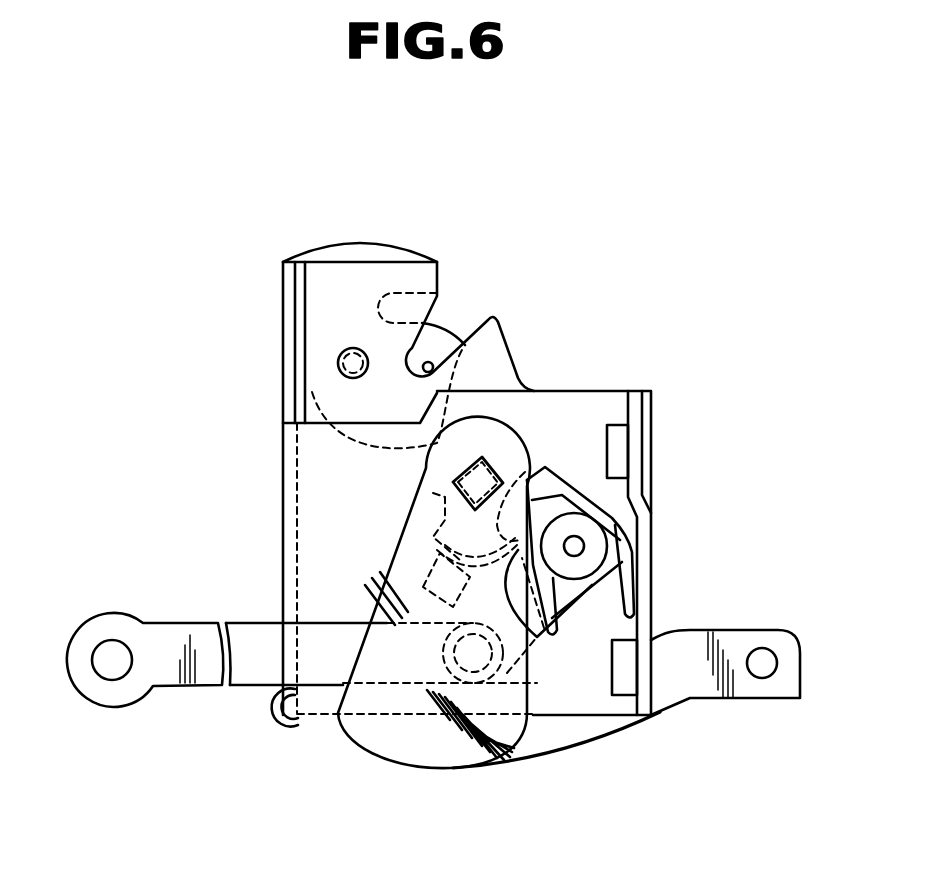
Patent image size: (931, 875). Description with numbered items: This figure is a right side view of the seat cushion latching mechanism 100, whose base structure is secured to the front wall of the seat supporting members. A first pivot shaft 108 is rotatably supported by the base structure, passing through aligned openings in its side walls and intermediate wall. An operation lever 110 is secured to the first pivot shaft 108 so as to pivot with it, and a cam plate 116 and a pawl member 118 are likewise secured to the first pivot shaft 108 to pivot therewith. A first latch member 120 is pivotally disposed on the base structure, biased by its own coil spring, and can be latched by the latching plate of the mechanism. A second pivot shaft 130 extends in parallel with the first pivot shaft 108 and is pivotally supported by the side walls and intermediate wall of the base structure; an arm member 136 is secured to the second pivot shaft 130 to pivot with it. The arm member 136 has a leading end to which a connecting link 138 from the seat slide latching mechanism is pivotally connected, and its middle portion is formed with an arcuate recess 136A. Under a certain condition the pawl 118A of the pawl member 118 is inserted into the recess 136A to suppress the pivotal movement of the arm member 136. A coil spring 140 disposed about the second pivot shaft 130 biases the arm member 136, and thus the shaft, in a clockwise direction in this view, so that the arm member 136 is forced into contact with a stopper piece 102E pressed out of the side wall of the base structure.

The seat cushion latching mechanism 100 is at (572, 284).
The first latch member 120 is at (360, 243).
The cam plate 116 is at (417, 745).
The first pivot shaft 108 is at (487, 465).
The pawl member 118 is at (435, 497).
The pawl 118A is at (430, 537).
The stopper piece 102E is at (427, 580).
The arm member 136 is at (560, 485).
The second pivot shaft 130 is at (597, 539).
The coil spring 140 is at (633, 578).
The connecting link 138 is at (113, 695).
The operation lever 110 is at (525, 755).
The arcuate recess 136A is at (544, 628).